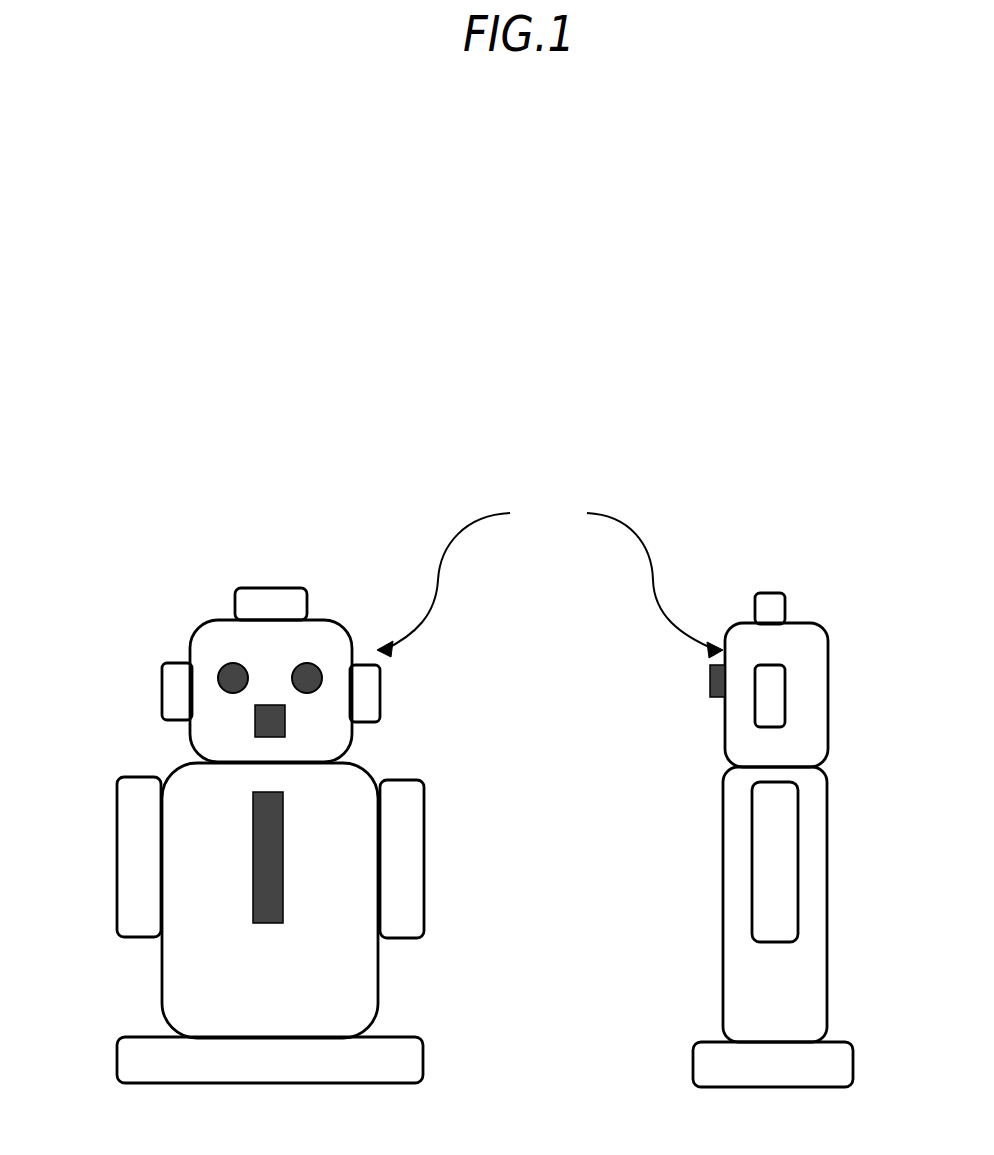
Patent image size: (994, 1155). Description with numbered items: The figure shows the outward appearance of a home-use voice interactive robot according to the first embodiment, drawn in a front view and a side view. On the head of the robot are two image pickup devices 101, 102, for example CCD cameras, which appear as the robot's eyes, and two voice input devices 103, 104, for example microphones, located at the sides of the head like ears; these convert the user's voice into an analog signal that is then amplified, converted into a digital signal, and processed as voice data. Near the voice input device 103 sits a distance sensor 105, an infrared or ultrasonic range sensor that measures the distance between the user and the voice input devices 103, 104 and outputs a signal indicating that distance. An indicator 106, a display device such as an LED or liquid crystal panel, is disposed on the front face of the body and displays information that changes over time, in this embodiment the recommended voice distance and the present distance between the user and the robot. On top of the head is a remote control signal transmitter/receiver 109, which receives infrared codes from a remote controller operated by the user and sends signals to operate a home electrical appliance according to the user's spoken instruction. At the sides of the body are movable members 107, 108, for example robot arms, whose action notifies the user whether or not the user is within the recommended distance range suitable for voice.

The image pickup device 101 is at (318, 668).
The image pickup device 102 is at (224, 668).
The voice input device 103 is at (382, 693).
The voice input device 104 is at (162, 690).
The distance sensor 105 is at (286, 720).
The indicator 106 is at (284, 858).
The movable member 107 is at (425, 858).
The movable member 108 is at (118, 853).
The remote control signal transmitter/receiver 109 is at (822, 583).